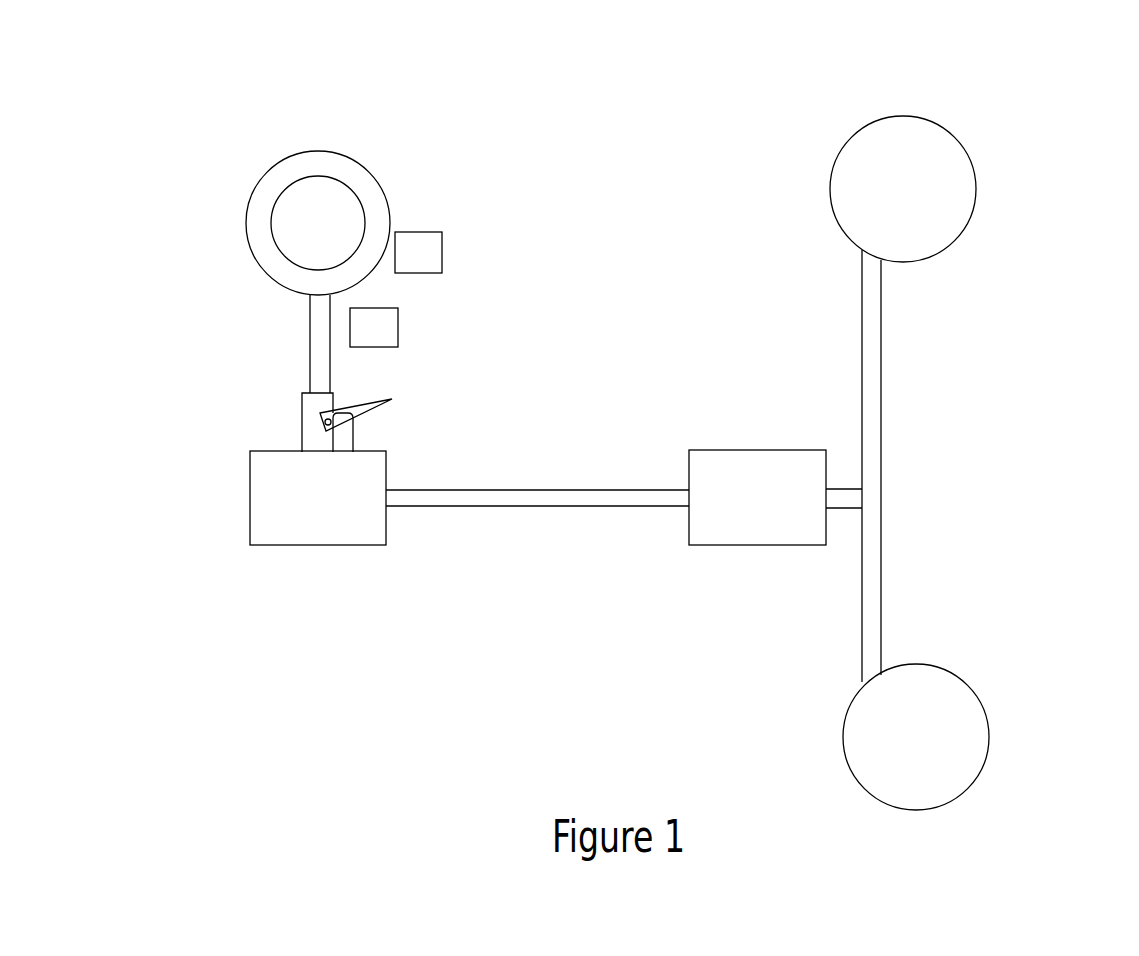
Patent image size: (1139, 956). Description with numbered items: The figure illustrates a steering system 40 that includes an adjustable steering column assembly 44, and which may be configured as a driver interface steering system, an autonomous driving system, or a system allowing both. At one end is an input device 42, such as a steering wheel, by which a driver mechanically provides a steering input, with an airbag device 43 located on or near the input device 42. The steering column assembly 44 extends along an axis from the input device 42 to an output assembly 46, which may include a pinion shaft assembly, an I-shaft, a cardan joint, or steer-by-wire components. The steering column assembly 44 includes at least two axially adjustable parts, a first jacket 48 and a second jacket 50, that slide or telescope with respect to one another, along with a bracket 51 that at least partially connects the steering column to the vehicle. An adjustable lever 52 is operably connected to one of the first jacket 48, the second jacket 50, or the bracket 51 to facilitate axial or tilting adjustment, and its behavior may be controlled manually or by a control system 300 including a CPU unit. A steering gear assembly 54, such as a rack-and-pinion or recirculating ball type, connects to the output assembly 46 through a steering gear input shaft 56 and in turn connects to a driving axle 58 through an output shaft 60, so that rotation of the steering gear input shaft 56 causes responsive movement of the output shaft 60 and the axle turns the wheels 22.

The steering system 40 is at (1030, 113).
The wheels 22 is at (957, 238).
The input device 42 is at (260, 190).
The airbag device 43 is at (430, 266).
The steering column assembly 44 is at (220, 353).
The output assembly 46 is at (329, 510).
The first jacket 48 is at (310, 325).
The second jacket 50 is at (302, 437).
The bracket 51 is at (355, 428).
The adjustable lever 52 is at (384, 404).
The steering gear assembly 54 is at (768, 510).
The steering gear input shaft 56 is at (665, 490).
The driving axle 58 is at (877, 543).
The output shaft 60 is at (848, 497).
The control system 300 is at (332, 390).